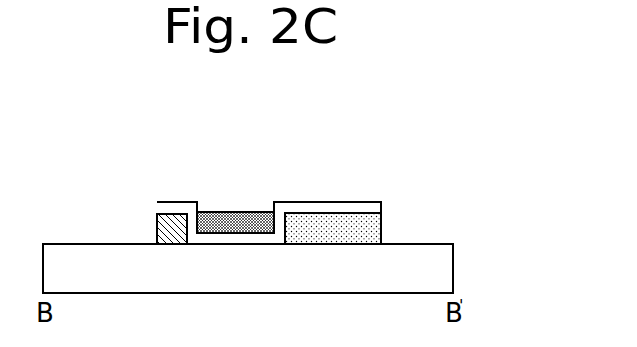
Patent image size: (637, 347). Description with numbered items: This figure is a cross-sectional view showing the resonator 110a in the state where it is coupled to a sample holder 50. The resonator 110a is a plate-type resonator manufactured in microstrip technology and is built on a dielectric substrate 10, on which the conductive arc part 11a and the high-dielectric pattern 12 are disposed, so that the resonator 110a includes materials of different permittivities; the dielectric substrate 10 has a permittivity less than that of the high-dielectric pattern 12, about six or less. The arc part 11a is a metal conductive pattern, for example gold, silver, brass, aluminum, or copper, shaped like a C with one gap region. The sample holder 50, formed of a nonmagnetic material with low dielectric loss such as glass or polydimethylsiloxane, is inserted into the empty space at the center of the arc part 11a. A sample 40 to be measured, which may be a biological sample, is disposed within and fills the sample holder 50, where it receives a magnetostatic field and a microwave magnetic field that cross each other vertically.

The resonator 110a is at (442, 108).
The dielectric substrate 10 is at (89, 243).
The arc part 11a is at (172, 218).
The sample 40 is at (235, 217).
The high-dielectric pattern 12 is at (320, 220).
The sample holder 50 is at (355, 207).